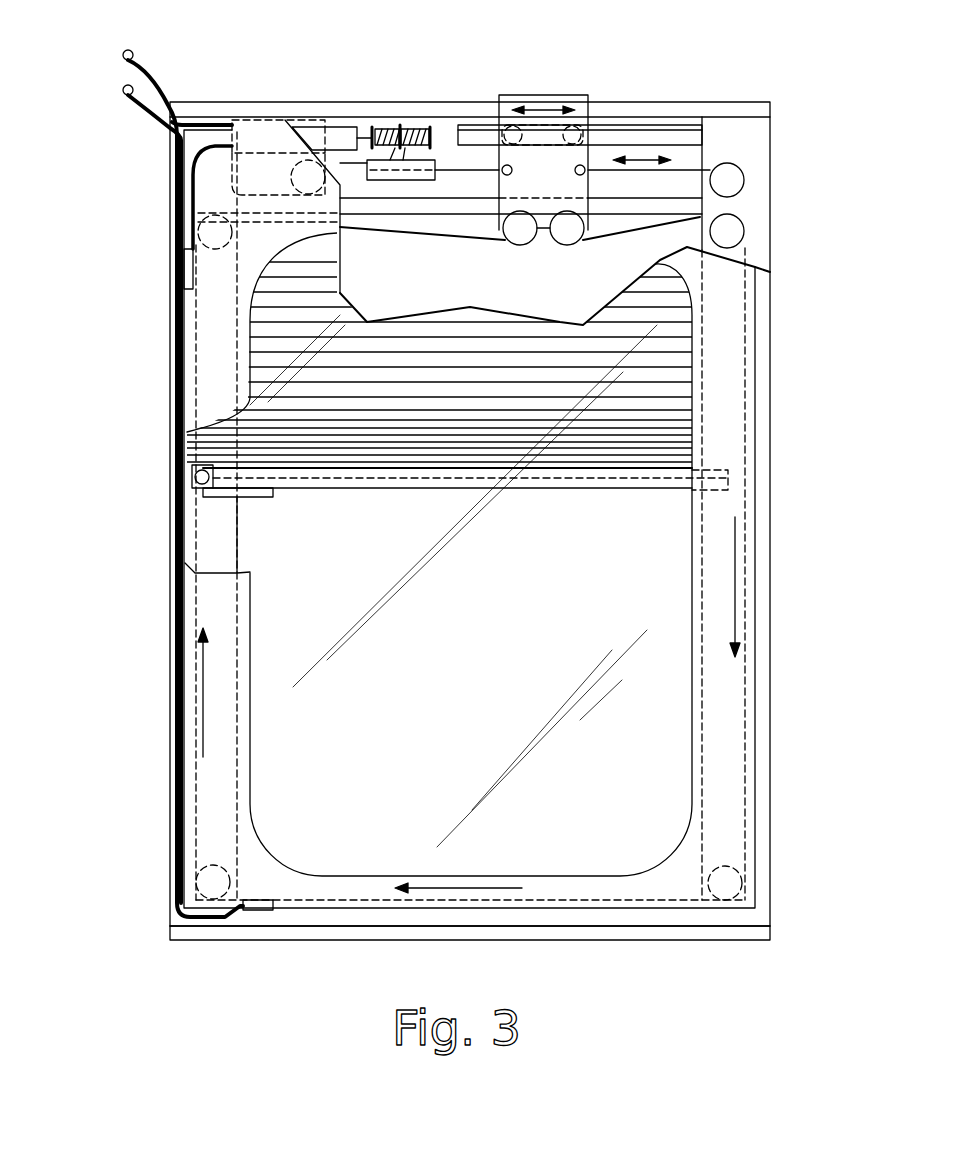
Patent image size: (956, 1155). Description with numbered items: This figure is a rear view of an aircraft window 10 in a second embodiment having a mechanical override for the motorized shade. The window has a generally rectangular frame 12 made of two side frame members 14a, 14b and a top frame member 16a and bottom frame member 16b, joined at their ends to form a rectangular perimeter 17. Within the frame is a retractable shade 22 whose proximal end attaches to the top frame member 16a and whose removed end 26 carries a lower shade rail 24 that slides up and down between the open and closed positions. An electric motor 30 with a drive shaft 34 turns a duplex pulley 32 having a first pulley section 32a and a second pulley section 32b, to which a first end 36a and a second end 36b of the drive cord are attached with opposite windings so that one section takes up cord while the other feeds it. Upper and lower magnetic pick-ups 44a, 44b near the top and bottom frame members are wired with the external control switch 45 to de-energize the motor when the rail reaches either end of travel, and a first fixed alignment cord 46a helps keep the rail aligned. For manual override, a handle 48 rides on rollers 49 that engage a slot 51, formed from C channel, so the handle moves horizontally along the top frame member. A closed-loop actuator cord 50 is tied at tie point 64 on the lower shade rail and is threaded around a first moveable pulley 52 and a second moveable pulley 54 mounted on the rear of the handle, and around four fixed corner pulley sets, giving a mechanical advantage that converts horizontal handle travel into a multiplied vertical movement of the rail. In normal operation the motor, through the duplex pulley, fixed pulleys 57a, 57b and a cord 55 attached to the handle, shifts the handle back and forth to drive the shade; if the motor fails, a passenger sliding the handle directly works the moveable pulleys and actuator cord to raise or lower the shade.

The aircraft window 10 is at (158, 958).
The frame 12 is at (172, 774).
The side frame member 14a is at (168, 608).
The side frame member 14b is at (770, 607).
The top frame member 16a is at (238, 101).
The bottom frame member 16b is at (448, 940).
The rectangular perimeter 17 is at (190, 425).
The shade 22 is at (448, 378).
The lower shade rail 24 is at (520, 493).
The removed end 26 is at (437, 473).
The electric motor 30 is at (305, 130).
The duplex pulley 32 is at (400, 112).
The first pulley section 32a is at (413, 118).
The second pulley section 32b is at (385, 118).
The drive shaft 34 is at (357, 127).
The first end of drive cord 36a is at (428, 118).
The second end of drive cord 36b is at (370, 128).
The upper magnetic pick-up 44a is at (185, 270).
The lower magnetic pick-up 44b is at (255, 912).
The external control switch 45 is at (115, 78).
The first fixed alignment cord 46a is at (237, 803).
The override handle 48 is at (535, 95).
The rollers 49 is at (548, 152).
The actuator cord 50 is at (417, 237).
The slot 51 is at (645, 130).
The first moveable pulley 52 is at (523, 243).
The second moveable pulley 54 is at (563, 243).
The cord 55 is at (710, 170).
The fixed pulley 57a is at (270, 195).
The fixed pulley 57b is at (733, 180).
The tie point 64 is at (207, 483).